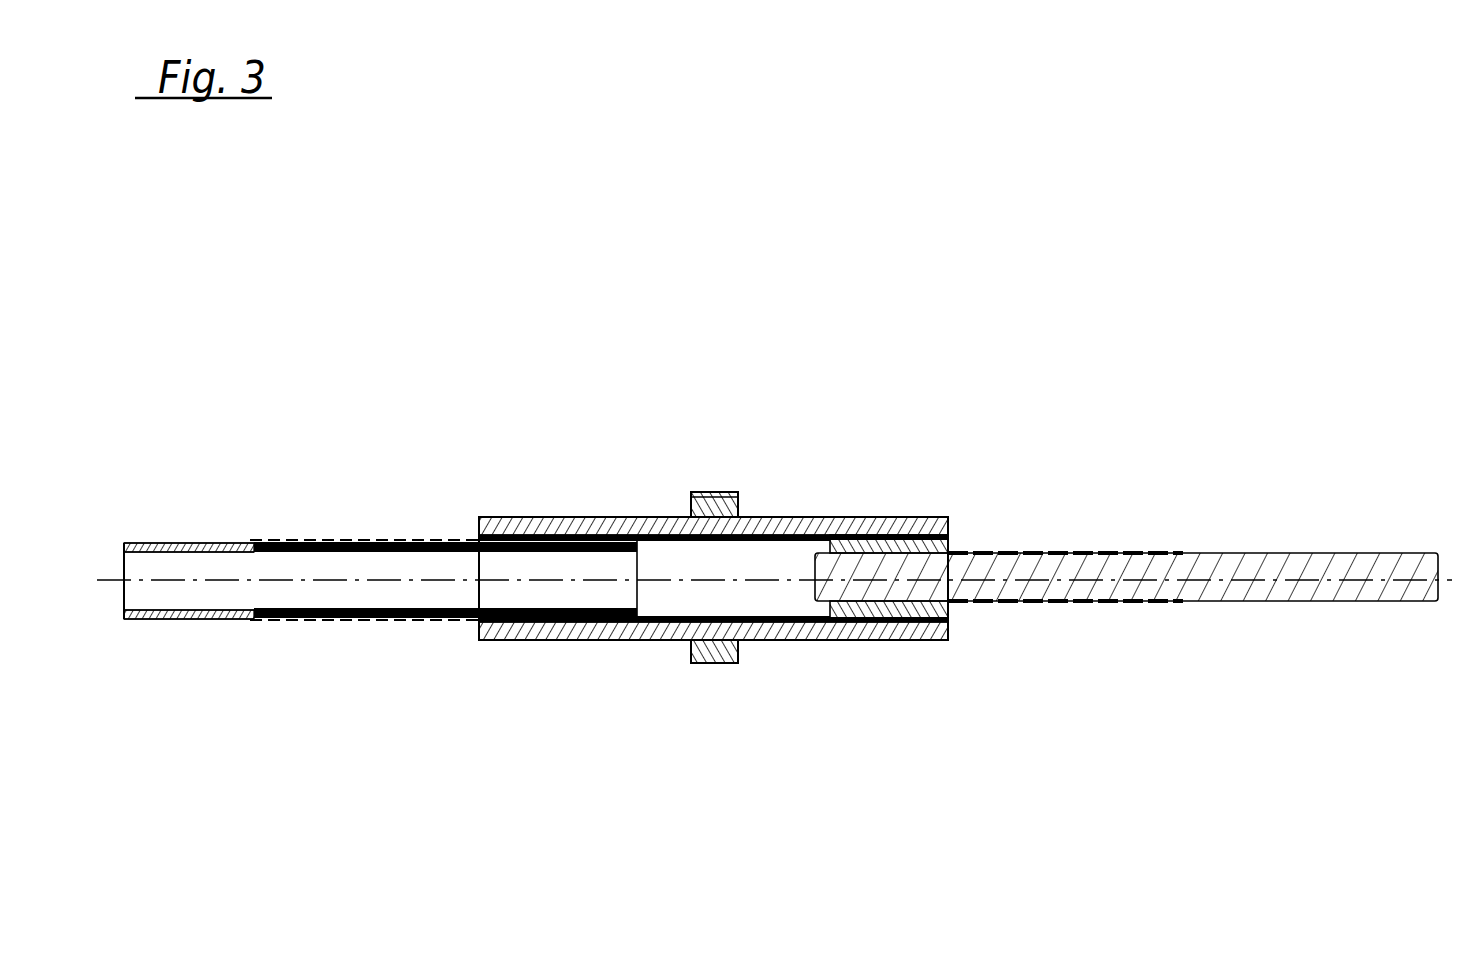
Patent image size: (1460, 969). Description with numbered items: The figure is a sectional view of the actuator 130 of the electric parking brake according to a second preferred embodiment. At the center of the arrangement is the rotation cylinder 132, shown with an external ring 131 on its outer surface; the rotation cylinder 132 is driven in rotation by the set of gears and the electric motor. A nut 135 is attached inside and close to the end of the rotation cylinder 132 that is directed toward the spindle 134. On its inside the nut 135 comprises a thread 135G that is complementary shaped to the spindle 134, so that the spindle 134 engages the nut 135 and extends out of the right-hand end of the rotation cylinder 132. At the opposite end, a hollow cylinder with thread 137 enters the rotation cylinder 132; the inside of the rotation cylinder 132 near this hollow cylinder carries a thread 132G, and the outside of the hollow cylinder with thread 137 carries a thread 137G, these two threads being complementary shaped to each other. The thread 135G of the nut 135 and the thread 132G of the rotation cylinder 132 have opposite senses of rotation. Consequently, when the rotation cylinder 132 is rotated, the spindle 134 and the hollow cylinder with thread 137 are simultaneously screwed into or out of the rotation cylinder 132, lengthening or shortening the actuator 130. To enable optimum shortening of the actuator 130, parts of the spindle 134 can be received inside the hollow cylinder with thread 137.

The actuator 130 is at (1358, 171).
The retaining ring 131 is at (714, 492).
The rotation cylinder 132 is at (553, 510).
The thread of the rotation cylinder 132G is at (549, 640).
The spindle 134 is at (1220, 543).
The nut 135 is at (881, 620).
The thread of the nut 135G is at (931, 515).
The hollow cylinder with thread 137 is at (300, 528).
The thread of the hollow cylinder 137G is at (374, 616).